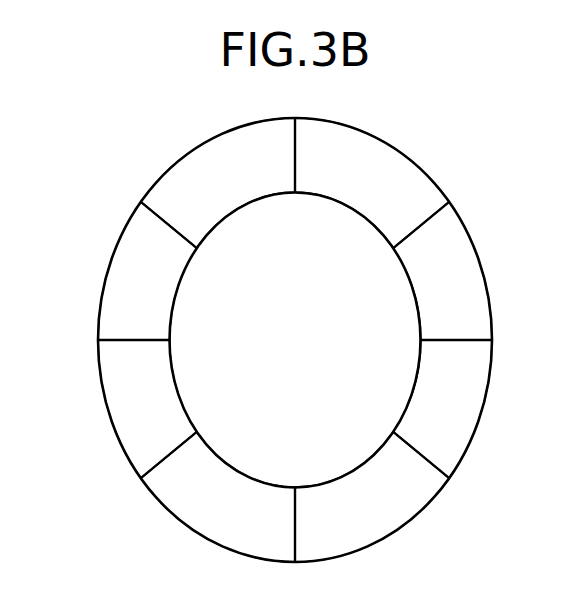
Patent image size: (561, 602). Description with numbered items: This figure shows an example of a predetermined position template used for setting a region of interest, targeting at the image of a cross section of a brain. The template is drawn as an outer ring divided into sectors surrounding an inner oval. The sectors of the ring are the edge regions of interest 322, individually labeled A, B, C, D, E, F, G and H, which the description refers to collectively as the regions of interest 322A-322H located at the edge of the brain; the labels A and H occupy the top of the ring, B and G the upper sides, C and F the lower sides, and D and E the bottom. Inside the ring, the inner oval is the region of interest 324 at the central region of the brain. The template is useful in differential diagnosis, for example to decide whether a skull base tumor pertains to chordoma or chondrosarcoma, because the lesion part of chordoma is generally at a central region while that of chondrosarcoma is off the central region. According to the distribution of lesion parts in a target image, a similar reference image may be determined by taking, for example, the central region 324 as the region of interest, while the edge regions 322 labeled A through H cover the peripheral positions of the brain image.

The regions of interest at the edge of the brain 322 is at (172, 168).
The region of interest at the central region of the brain 324 is at (217, 282).
The region of interest at the edge of the brain A is at (218, 183).
The region of interest at the edge of the brain B is at (147, 271).
The region of interest at the edge of the brain C is at (147, 409).
The region of interest at the edge of the brain D is at (218, 497).
The region of interest at the edge of the brain E is at (372, 497).
The region of interest at the edge of the brain F is at (442, 409).
The region of interest at the edge of the brain G is at (442, 271).
The region of interest at the edge of the brain H is at (372, 183).